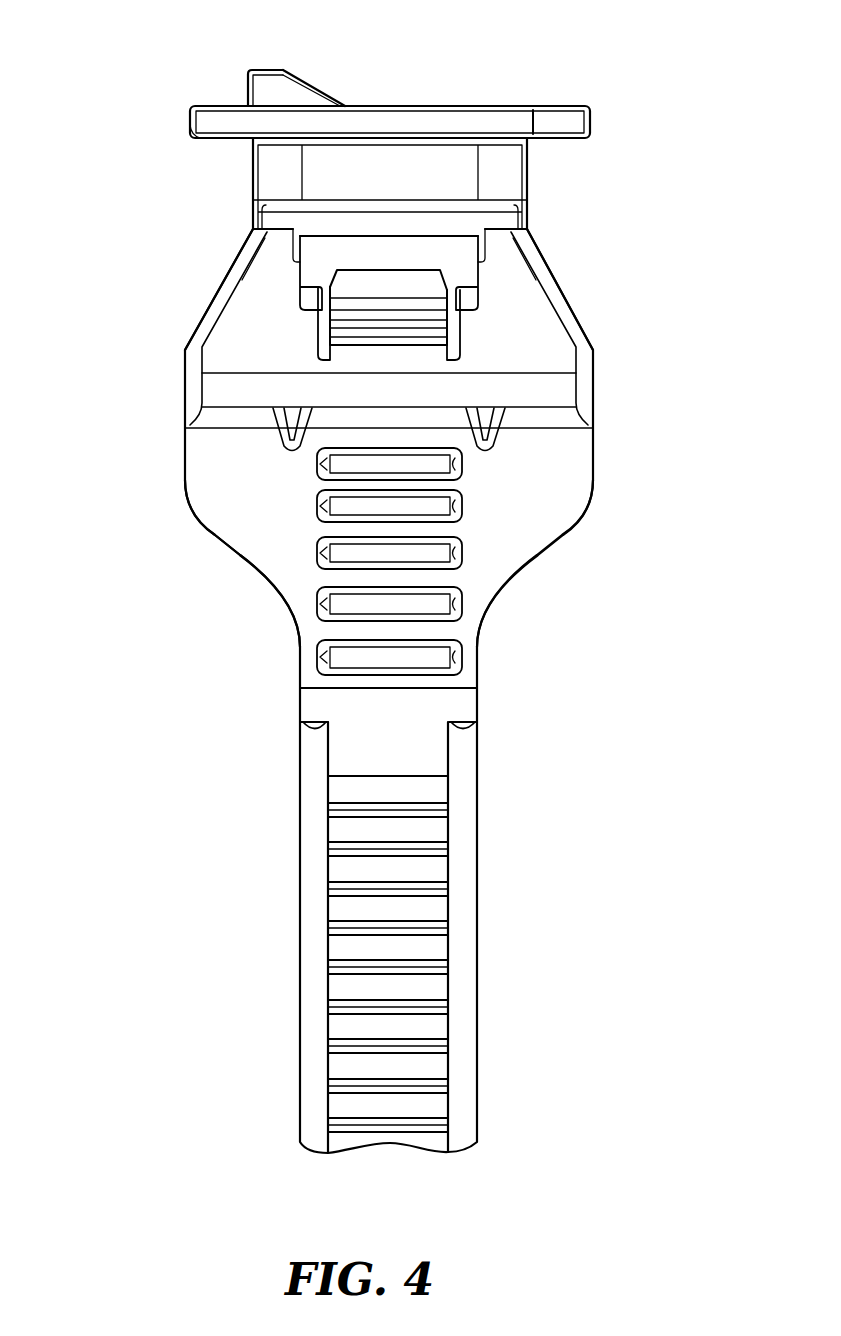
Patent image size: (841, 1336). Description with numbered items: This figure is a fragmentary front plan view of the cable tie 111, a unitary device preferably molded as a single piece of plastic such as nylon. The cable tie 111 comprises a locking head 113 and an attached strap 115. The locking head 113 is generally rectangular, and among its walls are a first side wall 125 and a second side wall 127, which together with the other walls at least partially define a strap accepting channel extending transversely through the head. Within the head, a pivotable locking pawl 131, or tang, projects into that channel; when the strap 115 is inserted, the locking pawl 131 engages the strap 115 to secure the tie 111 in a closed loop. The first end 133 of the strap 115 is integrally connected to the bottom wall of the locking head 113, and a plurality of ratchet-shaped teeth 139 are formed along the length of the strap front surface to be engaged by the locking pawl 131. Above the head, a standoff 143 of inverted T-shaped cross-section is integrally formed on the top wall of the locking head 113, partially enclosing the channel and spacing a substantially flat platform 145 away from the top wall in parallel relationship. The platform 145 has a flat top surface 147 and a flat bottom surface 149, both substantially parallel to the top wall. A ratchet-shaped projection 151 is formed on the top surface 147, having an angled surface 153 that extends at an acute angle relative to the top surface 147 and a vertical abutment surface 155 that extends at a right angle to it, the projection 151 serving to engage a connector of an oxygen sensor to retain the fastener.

The cable tie 111 is at (157, 665).
The locking head 113 is at (545, 353).
The strap 115 is at (468, 917).
The first side wall 125 is at (572, 300).
The second side wall 127 is at (190, 333).
The locking pawl 131 is at (355, 285).
The first end of strap 133 is at (548, 527).
The ratchet-shaped teeth 139 is at (340, 988).
The standoff 143 is at (508, 173).
The platform 145 is at (568, 126).
The top surface of platform 147 is at (517, 105).
The bottom surface of platform 149 is at (210, 142).
The ratchet-shaped projection 151 is at (299, 53).
The angled surface 153 is at (320, 87).
The vertical abutment surface 155 is at (248, 88).